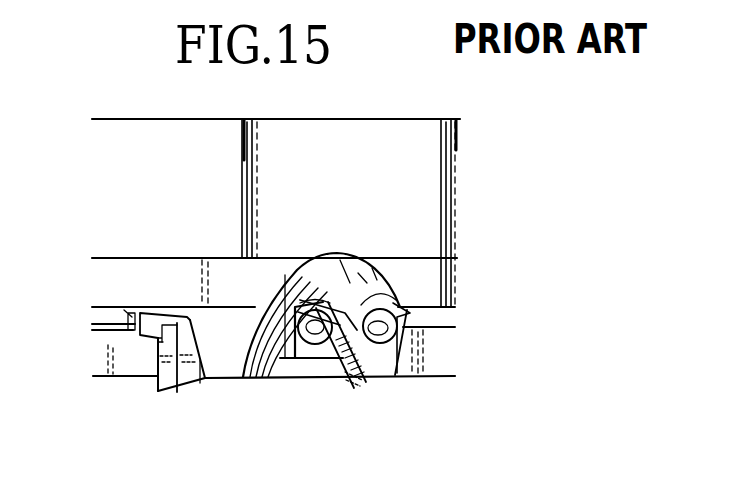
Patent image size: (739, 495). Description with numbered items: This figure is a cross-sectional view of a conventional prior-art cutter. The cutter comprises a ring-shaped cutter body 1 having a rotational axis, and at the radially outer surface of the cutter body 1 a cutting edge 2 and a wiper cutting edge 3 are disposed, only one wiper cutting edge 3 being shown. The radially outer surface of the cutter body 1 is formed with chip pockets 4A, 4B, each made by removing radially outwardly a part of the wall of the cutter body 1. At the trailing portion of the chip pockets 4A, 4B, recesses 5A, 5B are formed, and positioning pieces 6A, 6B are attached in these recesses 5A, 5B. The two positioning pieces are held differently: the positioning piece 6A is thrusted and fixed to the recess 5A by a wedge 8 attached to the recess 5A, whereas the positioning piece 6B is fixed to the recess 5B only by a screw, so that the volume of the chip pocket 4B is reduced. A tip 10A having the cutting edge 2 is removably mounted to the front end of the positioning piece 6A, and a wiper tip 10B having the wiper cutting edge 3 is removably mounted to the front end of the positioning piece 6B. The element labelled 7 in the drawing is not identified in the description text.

The cutter body 1 is at (275, 135).
The cutting edge 2 is at (348, 383).
The wiper cutting edge 3 is at (157, 390).
The chip pocket 4A is at (273, 287).
The chip pocket 4B is at (121, 345).
The recess 5A is at (293, 365).
The recess 5B is at (150, 317).
The positioning piece 6A is at (380, 367).
The positioning piece 6B is at (198, 387).
The frame 7 is at (327, 342).
The wedge 8 is at (313, 297).
The tip 10A is at (350, 378).
The wiper tip 10B is at (167, 383).